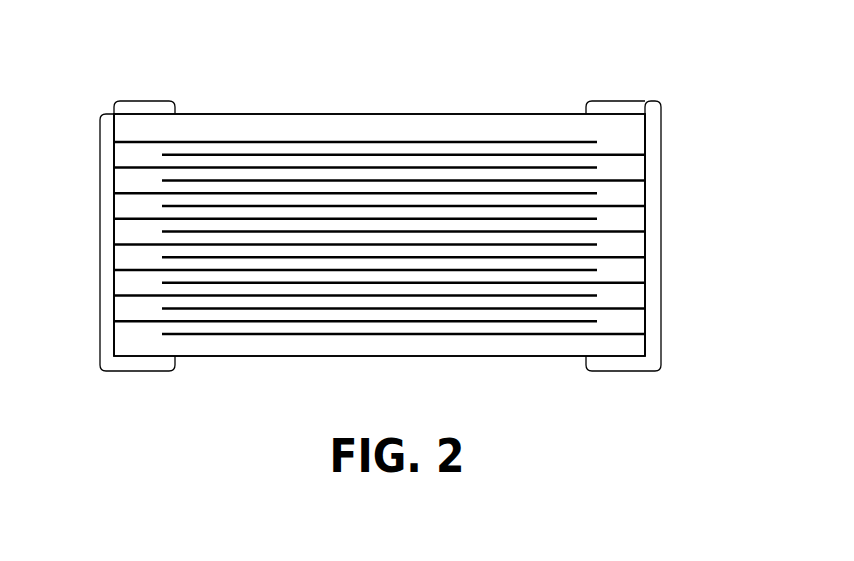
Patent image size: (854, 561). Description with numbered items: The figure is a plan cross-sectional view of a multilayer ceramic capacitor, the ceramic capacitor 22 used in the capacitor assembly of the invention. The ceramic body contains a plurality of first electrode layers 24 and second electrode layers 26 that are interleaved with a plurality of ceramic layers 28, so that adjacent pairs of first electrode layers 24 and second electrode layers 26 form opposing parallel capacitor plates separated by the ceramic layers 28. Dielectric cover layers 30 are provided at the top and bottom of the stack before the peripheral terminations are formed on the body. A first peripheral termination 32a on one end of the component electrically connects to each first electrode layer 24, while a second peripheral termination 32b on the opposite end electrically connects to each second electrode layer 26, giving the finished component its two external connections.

The ceramic capacitor 22 is at (388, 226).
The first electrode layers 24 is at (130, 143).
The second electrode layers 26 is at (627, 180).
The ceramic layers 28 is at (635, 272).
The dielectric cover layers 30 is at (637, 133).
The first peripheral termination 32a is at (105, 361).
The second peripheral termination 32b is at (652, 362).